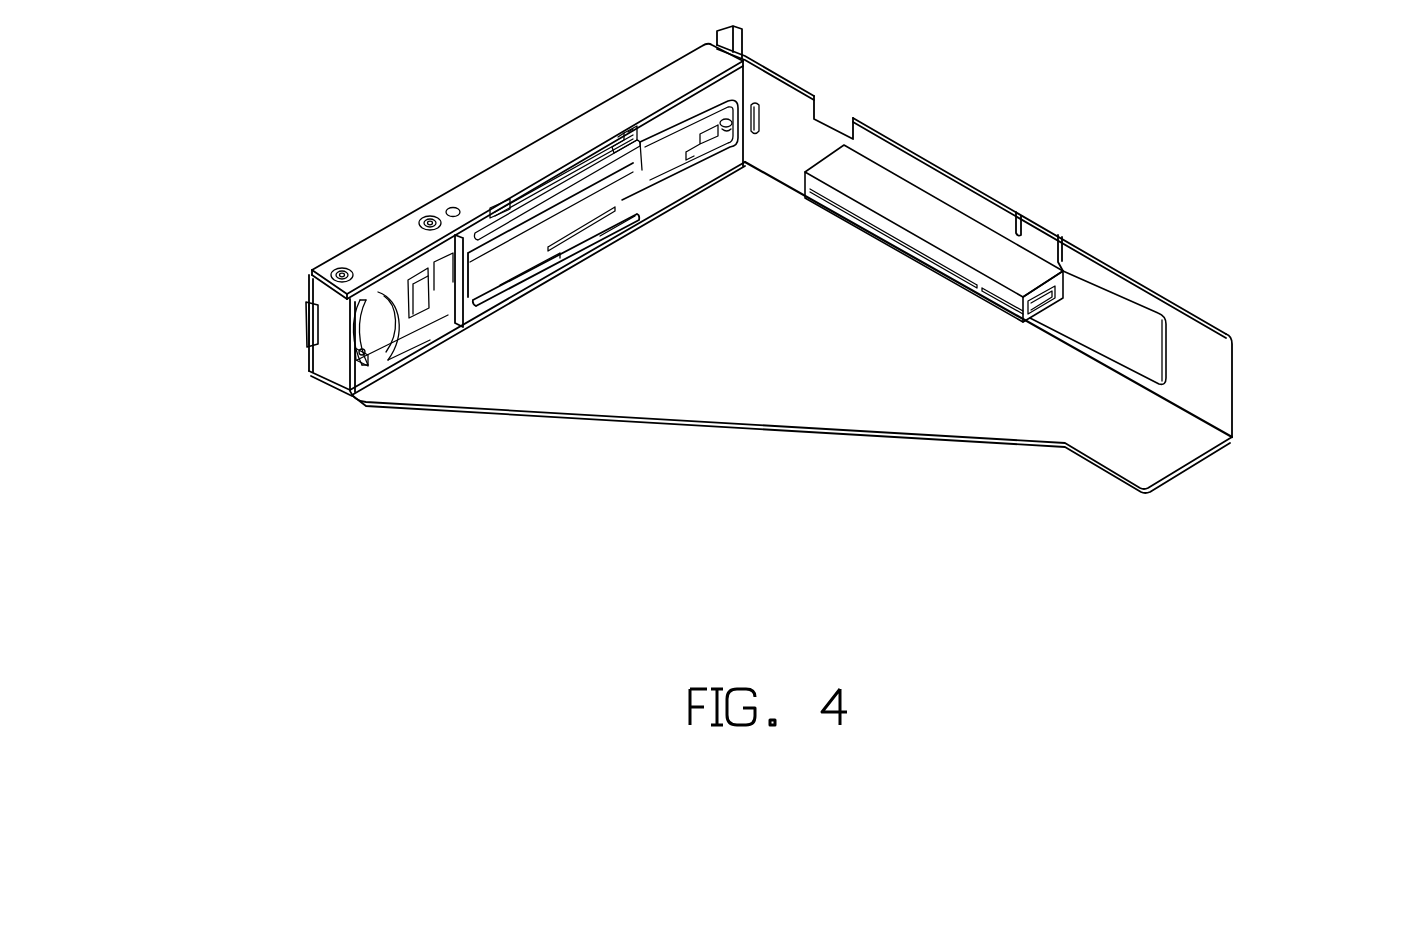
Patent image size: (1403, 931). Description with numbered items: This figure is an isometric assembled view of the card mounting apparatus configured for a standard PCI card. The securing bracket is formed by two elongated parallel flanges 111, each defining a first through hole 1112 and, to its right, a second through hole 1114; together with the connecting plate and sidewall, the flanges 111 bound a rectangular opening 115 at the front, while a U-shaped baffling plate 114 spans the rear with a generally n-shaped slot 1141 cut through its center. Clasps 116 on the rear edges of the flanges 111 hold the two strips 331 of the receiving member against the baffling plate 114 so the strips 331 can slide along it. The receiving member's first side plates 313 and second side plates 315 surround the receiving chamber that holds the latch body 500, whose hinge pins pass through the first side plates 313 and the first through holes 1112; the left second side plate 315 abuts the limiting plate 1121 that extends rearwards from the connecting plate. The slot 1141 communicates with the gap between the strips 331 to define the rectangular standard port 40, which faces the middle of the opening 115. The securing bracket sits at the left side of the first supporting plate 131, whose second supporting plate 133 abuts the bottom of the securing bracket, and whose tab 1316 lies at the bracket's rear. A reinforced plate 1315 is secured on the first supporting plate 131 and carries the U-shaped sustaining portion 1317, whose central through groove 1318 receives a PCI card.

The standard port 40 is at (665, 153).
The flange 111 is at (498, 183).
The baffling plate 114 is at (708, 98).
The opening 115 is at (522, 237).
The clasp 116 is at (621, 130).
The first supporting plate 131 is at (1208, 365).
The second supporting plate 133 is at (936, 408).
The first side plate 313 is at (357, 350).
The second side plate 315 is at (332, 358).
The strip 331 is at (560, 203).
The latch body 500 is at (444, 300).
The first through hole 1112 is at (342, 268).
The second through hole 1114 is at (430, 215).
The limiting plate 1121 is at (316, 327).
The slot 1141 is at (603, 200).
The reinforced plate 1315 is at (903, 161).
The tab 1316 is at (760, 110).
The sustaining portion 1317 is at (971, 247).
The through groove 1318 is at (1066, 282).